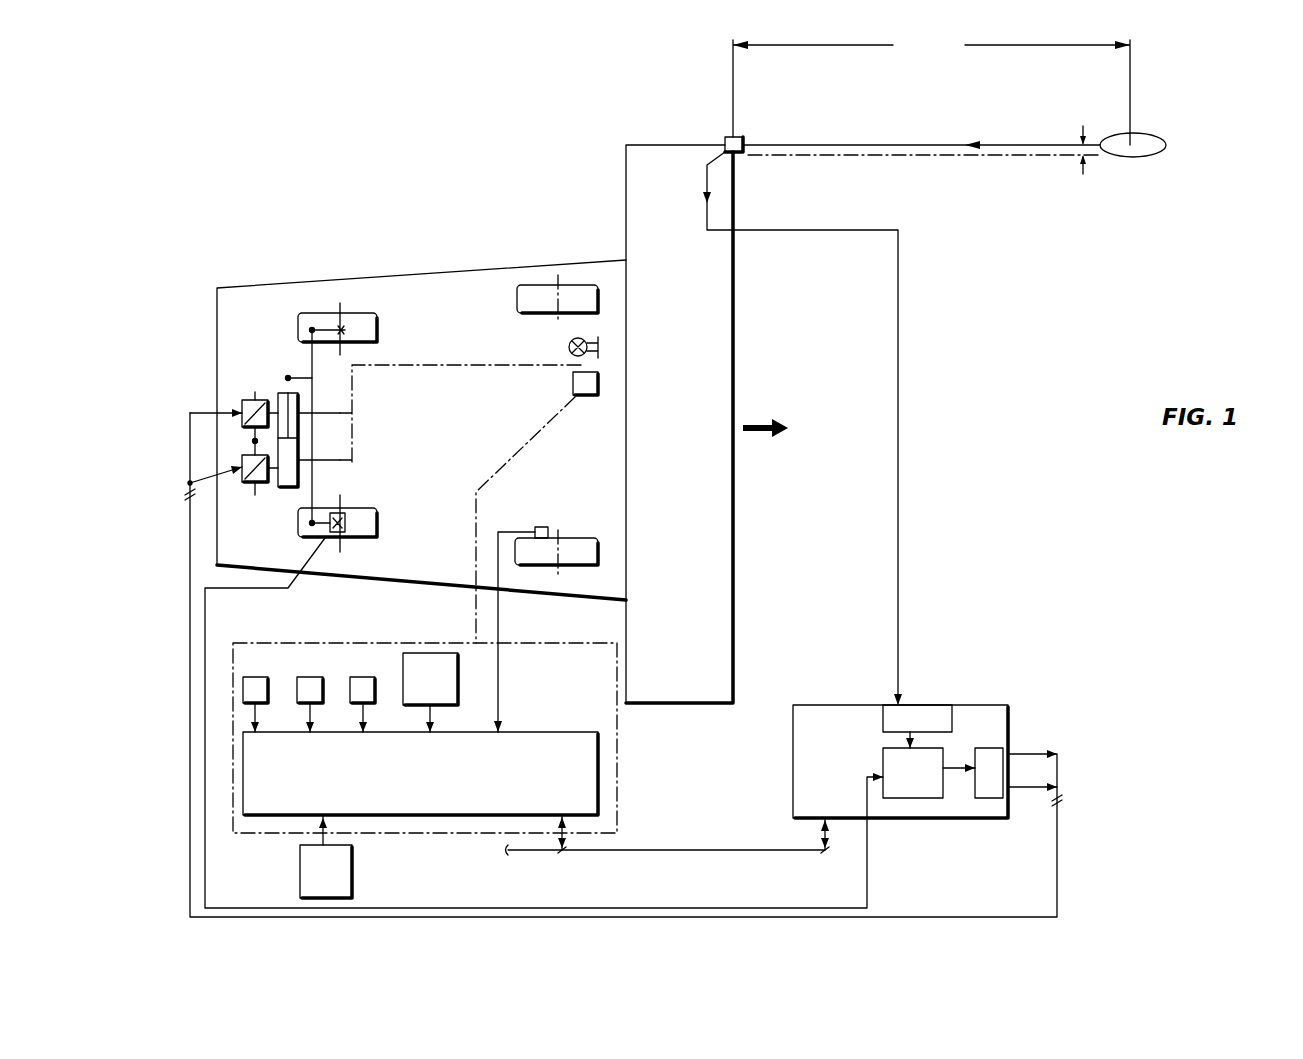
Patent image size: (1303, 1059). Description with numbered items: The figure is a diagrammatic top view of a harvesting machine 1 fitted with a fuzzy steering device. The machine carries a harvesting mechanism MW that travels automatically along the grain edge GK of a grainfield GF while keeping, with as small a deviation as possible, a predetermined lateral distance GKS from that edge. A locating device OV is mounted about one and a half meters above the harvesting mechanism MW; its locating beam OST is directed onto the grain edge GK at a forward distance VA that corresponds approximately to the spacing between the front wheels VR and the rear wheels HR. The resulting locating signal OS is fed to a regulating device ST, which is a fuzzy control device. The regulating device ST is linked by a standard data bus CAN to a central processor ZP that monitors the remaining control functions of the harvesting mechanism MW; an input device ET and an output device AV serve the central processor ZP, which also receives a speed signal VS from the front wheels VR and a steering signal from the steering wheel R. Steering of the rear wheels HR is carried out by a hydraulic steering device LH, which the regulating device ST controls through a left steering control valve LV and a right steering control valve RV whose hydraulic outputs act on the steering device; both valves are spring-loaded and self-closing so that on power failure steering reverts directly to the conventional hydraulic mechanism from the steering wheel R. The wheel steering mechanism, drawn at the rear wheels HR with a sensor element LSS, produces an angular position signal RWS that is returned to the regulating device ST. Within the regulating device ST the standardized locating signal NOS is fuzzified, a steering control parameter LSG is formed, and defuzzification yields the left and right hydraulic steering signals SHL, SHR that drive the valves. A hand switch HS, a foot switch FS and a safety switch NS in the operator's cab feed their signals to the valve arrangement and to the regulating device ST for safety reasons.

The harvesting machine 1 is at (418, 427).
The locating device OV is at (718, 96).
The forward distance VA is at (931, 88).
The locating beam OST is at (931, 142).
The grain edge GK is at (983, 158).
The lateral distance from the grain edge GKS is at (1075, 160).
The locating signal OS is at (900, 515).
The grainfield GF is at (980, 329).
The harvesting mechanism MW is at (690, 523).
The steering wheel R is at (570, 347).
The right steering control valve RV is at (242, 402).
The left steering control valve LV is at (242, 457).
The hydraulic steering device LH is at (282, 480).
The rear wheels HR is at (362, 515).
The steering angle sensor LSS is at (348, 538).
The speed signal VS is at (541, 526).
The front wheels VR is at (590, 545).
The hand switch HS is at (270, 658).
The foot switch FS is at (322, 658).
The safety switch NS is at (376, 658).
The input device ET is at (430, 692).
The central processor ZP is at (420, 773).
The output device AV is at (326, 856).
The standard data bus CAN is at (705, 848).
The regulating device ST is at (900, 761).
The standardized locating signal NOS is at (905, 741).
The left hydraulic steering signal SHL is at (1029, 756).
The right hydraulic steering signal SHR is at (1030, 786).
The steering control parameter LSG is at (958, 776).
The angular position signal RWS is at (868, 842).